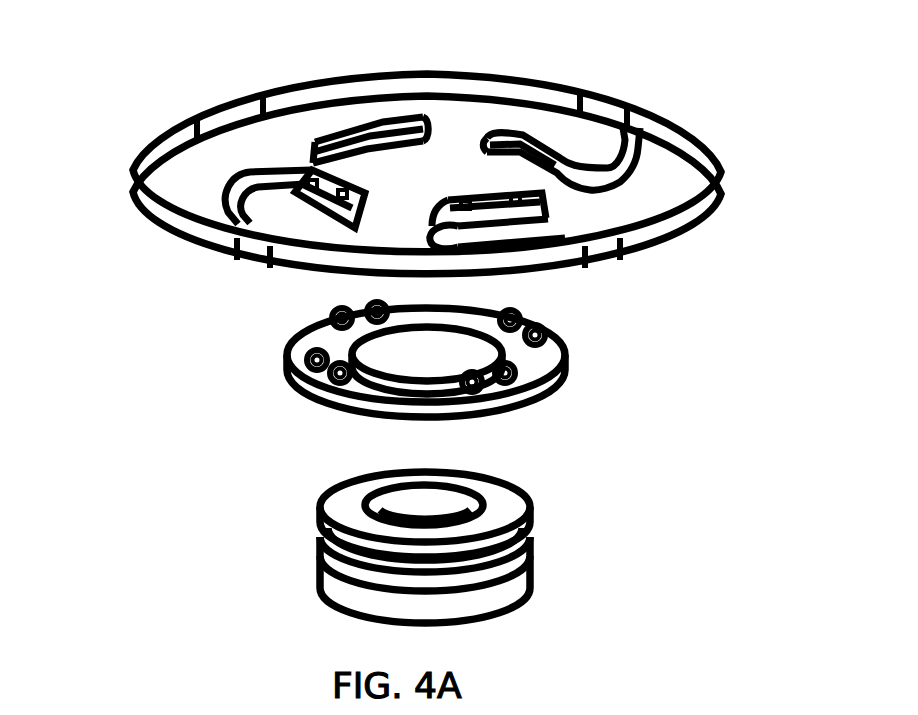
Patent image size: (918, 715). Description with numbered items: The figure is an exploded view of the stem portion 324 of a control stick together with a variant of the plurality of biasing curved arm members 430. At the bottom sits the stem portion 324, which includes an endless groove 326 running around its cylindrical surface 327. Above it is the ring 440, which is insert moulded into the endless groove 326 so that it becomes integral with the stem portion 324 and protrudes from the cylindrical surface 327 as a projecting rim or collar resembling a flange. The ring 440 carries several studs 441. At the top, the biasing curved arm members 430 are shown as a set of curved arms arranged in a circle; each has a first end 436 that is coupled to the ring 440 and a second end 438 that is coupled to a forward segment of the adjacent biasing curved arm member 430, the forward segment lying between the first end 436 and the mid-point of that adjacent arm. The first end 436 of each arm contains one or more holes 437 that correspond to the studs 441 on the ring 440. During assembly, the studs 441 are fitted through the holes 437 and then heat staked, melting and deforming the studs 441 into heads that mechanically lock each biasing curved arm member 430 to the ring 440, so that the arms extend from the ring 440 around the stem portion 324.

The biasing curved arm members 430 is at (495, 68).
The second end 438 is at (233, 108).
The first end 436 is at (496, 157).
The holes 437 is at (530, 195).
The ring 440 is at (292, 372).
The studs 441 is at (508, 376).
The stem portion 324 is at (426, 547).
The cylindrical surface 327 is at (340, 538).
The endless groove 326 is at (340, 558).